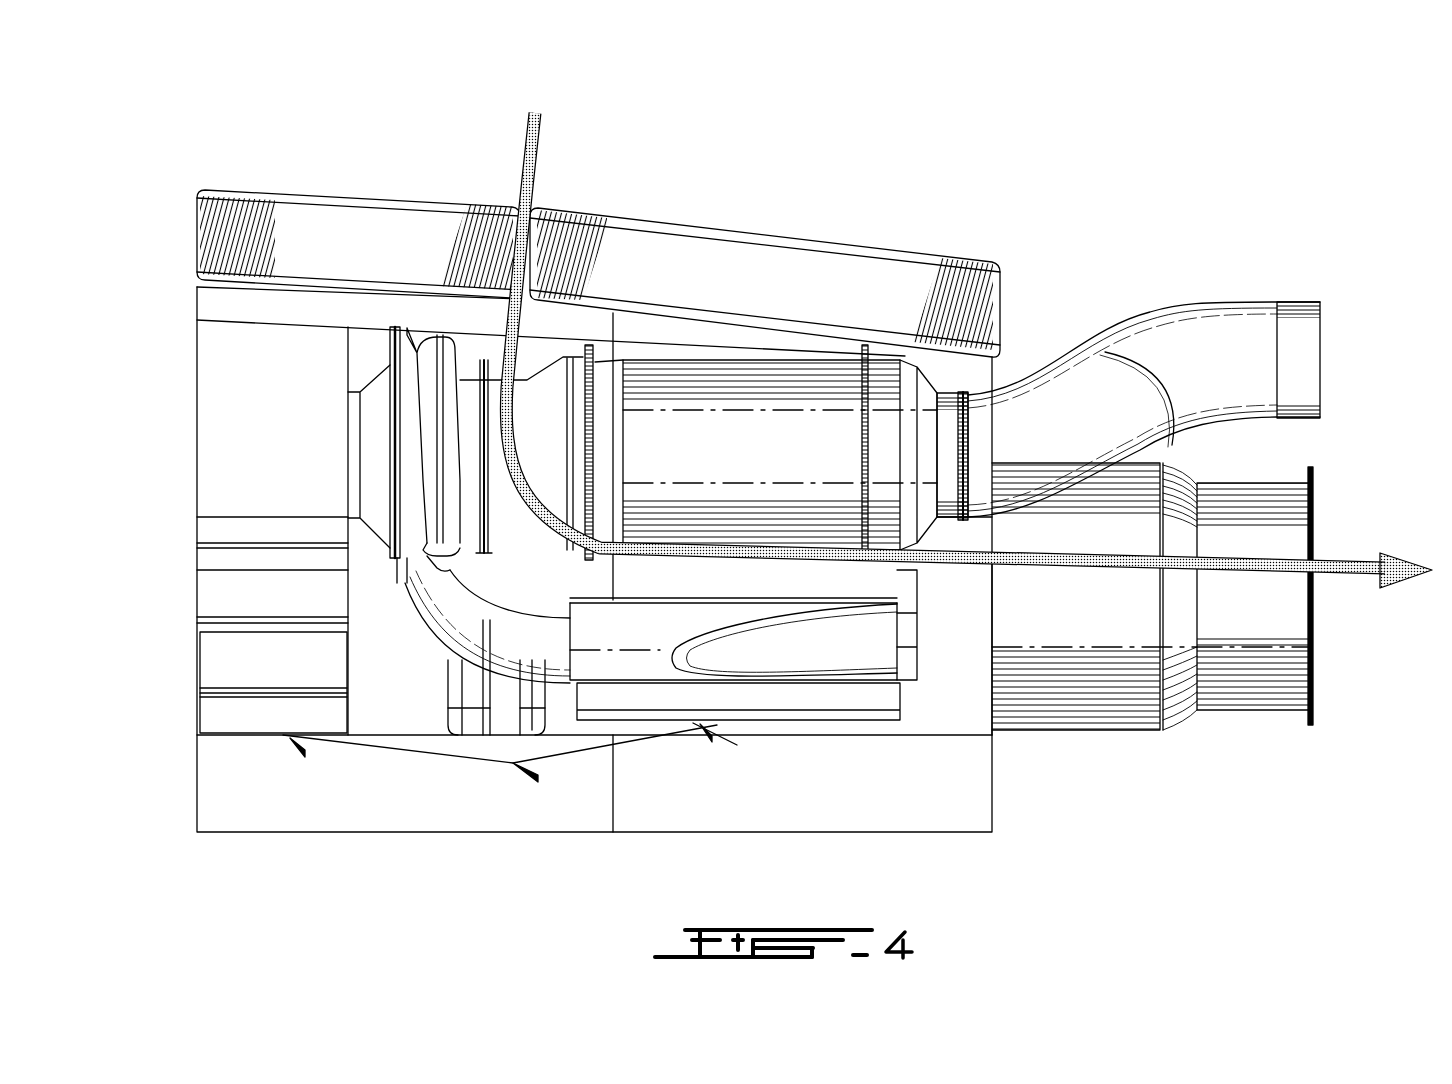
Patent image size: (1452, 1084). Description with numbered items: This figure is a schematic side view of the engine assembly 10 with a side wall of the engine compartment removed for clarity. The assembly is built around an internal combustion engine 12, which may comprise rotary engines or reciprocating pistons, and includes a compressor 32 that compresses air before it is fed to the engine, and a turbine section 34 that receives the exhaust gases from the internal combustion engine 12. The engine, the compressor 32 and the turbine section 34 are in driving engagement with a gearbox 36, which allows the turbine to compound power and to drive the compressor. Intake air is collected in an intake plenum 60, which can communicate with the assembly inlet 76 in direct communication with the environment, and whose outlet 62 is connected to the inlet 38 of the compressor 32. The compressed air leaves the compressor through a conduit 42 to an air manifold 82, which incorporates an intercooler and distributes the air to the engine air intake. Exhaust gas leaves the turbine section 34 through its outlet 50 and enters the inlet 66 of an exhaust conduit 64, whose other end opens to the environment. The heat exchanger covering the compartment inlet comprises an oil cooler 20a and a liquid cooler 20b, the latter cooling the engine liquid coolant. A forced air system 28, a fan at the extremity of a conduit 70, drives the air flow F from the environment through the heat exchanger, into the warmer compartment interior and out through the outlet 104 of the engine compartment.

The engine assembly 10 is at (1262, 145).
The internal combustion engine 12 is at (747, 572).
The oil cooler 20a is at (660, 220).
The liquid cooler 20b is at (375, 252).
The forced air system 28 is at (1243, 633).
The compressor 32 is at (455, 350).
The turbine section 34 is at (815, 368).
The gearbox 36 is at (513, 735).
The compressor inlet 38 is at (392, 360).
The conduit 42 is at (500, 680).
The turbine section outlet 50 is at (932, 530).
The intake plenum 60 is at (280, 482).
The intake plenum outlet 62 is at (348, 428).
The exhaust conduit 64 is at (1227, 300).
The exhaust conduit inlet 66 is at (972, 398).
The conduit 70 is at (1112, 730).
The assembly inlet 76 is at (278, 665).
The air manifold 82 is at (602, 643).
The outlet 104 is at (990, 695).
The air flow F is at (1355, 582).